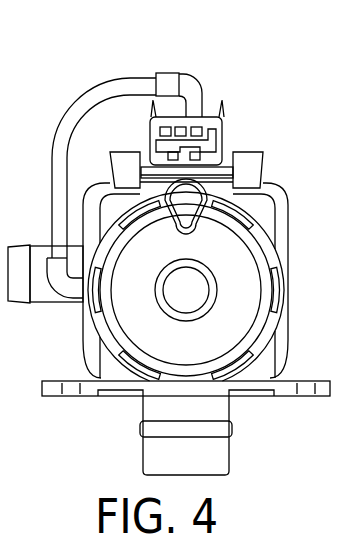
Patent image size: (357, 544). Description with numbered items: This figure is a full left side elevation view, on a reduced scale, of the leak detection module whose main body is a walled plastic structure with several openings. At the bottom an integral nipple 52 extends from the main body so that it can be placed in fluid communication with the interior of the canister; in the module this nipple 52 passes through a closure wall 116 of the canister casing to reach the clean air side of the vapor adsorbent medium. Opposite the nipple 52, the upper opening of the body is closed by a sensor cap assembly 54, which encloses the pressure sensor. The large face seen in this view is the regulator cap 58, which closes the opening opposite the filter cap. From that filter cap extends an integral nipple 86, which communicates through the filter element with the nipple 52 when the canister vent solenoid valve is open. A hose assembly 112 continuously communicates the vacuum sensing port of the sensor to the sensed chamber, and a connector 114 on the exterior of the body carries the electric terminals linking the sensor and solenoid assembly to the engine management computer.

The hose assembly 112 is at (111, 83).
The connector 114 is at (223, 133).
The sensor cap assembly 54 is at (262, 152).
The regulator cap 58 is at (232, 259).
The nipple 86 is at (45, 292).
The closure wall 116 is at (72, 397).
The nipple 52 is at (150, 450).